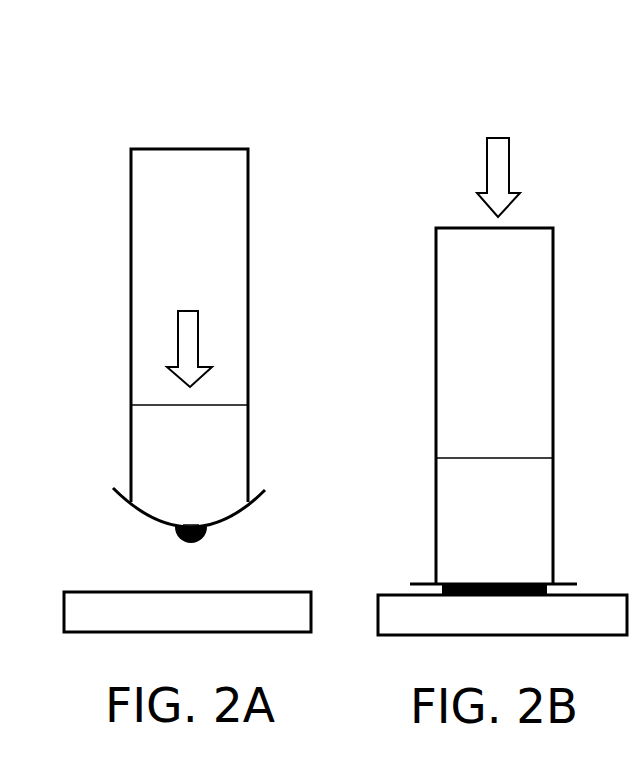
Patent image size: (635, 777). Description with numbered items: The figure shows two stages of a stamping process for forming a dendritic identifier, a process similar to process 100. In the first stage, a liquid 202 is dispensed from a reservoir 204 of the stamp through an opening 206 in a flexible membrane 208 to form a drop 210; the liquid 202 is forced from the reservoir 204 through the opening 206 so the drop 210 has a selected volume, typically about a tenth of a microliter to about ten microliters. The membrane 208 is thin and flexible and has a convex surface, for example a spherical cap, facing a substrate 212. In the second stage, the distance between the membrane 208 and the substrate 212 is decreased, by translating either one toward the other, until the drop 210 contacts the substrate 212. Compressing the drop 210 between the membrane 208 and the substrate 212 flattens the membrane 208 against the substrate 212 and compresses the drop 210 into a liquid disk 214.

In FIG. 2A, the process 100 is at (268, 70).
In FIG. 2A, the liquid 202 is at (215, 451).
In FIG. 2B, the liquid 202 is at (517, 522).
In FIG. 2A, the reservoir 204 is at (131, 338).
In FIG. 2B, the reservoir 204 is at (435, 364).
In FIG. 2A, the opening 206 is at (189, 512).
In FIG. 2B, the opening 206 is at (627, 304).
In FIG. 2A, the flexible membrane 208 is at (265, 490).
In FIG. 2B, the flexible membrane 208 is at (565, 583).
In FIG. 2A, the drop 210 is at (188, 545).
In FIG. 2A, the substrate 212 is at (290, 624).
In FIG. 2B, the substrate 212 is at (605, 629).
In FIG. 2B, the liquid disk 214 is at (440, 592).